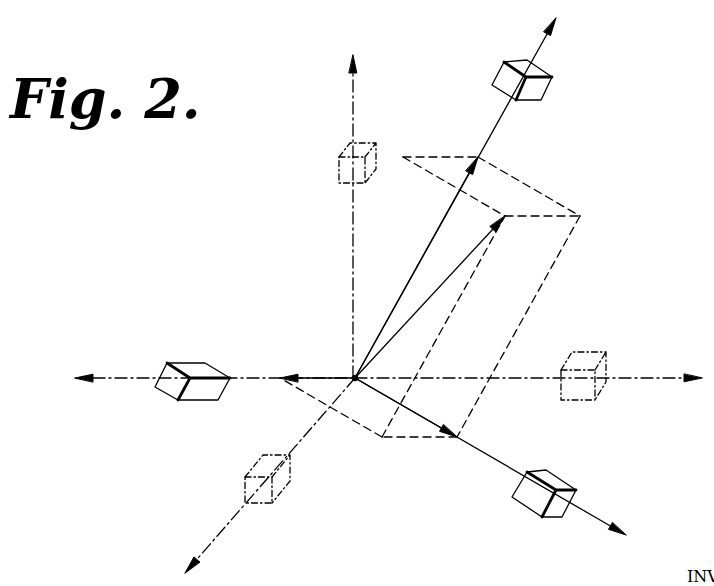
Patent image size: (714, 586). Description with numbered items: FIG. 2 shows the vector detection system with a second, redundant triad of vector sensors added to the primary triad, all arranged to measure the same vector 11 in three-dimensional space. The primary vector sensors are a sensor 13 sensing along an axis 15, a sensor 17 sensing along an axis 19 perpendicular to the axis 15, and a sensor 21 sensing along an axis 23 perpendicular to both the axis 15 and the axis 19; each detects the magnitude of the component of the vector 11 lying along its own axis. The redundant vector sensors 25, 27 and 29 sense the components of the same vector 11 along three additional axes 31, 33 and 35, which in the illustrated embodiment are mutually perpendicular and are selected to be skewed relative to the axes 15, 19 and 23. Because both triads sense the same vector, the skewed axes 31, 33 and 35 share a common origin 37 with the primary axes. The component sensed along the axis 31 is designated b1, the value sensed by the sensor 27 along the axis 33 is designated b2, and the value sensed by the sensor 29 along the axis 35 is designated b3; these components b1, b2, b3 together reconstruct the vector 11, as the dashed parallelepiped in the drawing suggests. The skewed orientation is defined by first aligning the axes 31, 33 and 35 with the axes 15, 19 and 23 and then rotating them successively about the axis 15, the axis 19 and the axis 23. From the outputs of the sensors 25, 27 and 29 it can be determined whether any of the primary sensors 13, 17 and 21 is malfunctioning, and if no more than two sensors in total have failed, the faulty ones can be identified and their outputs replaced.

The vector 11 is at (500, 219).
The sensor 13 is at (248, 488).
The axis 15 is at (208, 545).
The sensor 17 is at (585, 352).
The axis 19 is at (633, 377).
The sensor 21 is at (376, 150).
The axis 23 is at (354, 96).
The vector sensor 25 is at (555, 472).
The vector sensor 27 is at (499, 72).
The vector sensor 29 is at (192, 363).
The axis 31 is at (590, 514).
The axis 33 is at (546, 50).
The axis 35 is at (97, 379).
The common origin 37 is at (359, 377).
The sensed value b1 is at (439, 419).
The sensed value b2 is at (467, 177).
The sensed value b3 is at (310, 376).